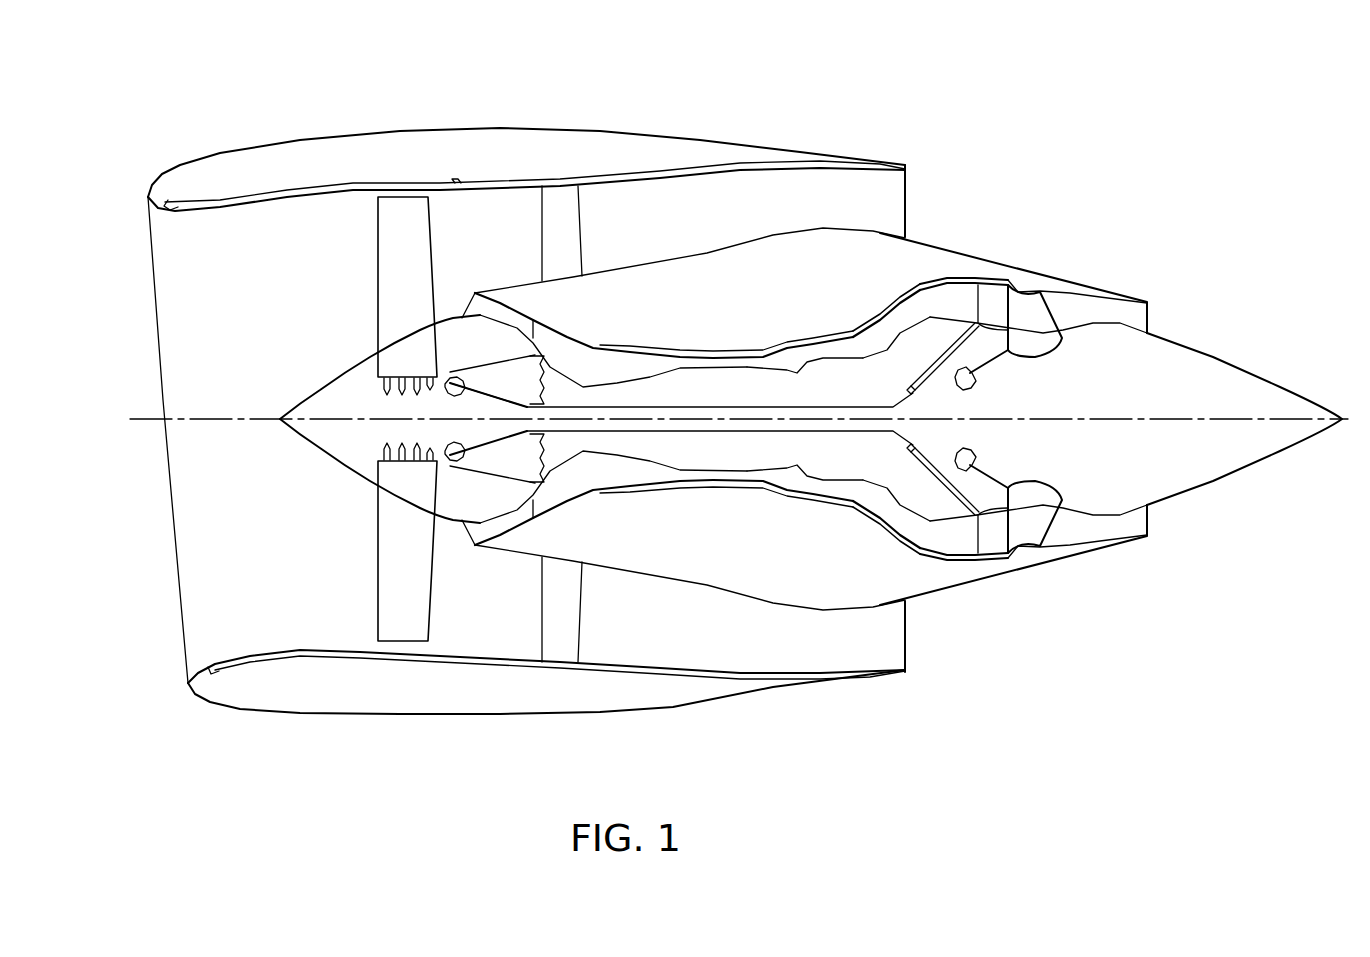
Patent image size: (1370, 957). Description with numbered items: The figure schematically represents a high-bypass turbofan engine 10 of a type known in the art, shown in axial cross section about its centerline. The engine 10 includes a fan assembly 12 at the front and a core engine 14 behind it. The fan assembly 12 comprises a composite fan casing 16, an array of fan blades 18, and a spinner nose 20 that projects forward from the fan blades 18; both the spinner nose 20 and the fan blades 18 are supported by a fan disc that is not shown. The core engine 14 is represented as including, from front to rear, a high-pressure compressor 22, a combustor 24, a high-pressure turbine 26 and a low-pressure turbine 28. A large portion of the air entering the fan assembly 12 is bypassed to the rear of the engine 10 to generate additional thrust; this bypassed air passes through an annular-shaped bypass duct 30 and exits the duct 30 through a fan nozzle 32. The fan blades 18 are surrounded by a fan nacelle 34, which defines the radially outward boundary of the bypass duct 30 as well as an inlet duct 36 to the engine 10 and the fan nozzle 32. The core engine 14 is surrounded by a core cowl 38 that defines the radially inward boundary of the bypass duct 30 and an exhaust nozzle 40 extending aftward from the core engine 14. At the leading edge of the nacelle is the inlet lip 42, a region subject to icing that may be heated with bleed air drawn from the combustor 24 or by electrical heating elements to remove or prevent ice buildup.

The high-bypass turbofan engine 10 is at (808, 88).
The fan assembly 12 is at (232, 611).
The core engine 14 is at (992, 622).
The composite fan casing 16 is at (500, 665).
The fan blades 18 is at (383, 250).
The spinner nose 20 is at (340, 458).
The high-pressure compressor 22 is at (627, 360).
The combustor 24 is at (803, 362).
The high-pressure turbine 26 is at (838, 501).
The low-pressure turbine 28 is at (940, 300).
The bypass duct 30 is at (656, 233).
The fan nozzle 32 is at (932, 169).
The fan nacelle 34 is at (284, 140).
The inlet duct 36 is at (156, 230).
The core cowl 38 is at (993, 262).
The exhaust nozzle 40 is at (1127, 297).
The inlet lip 42 is at (188, 681).